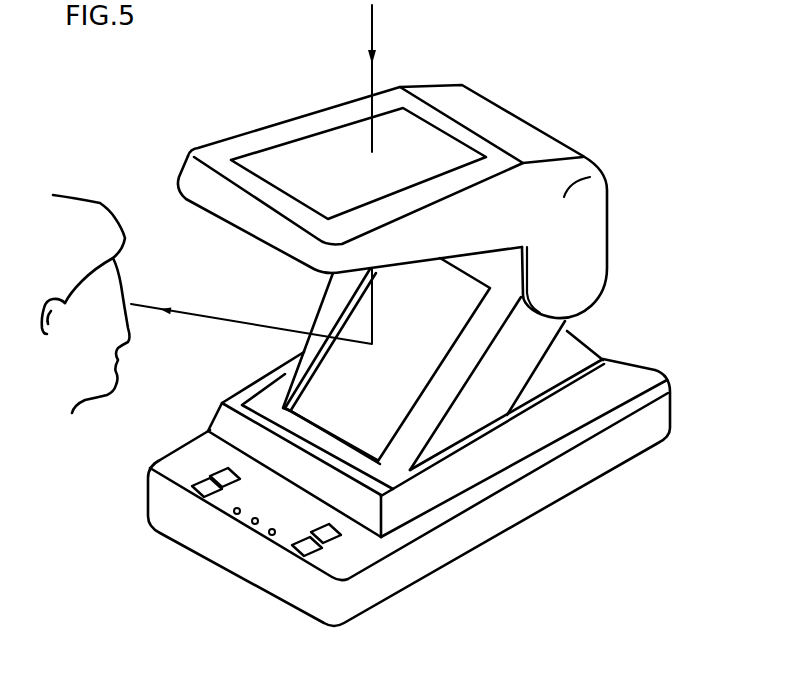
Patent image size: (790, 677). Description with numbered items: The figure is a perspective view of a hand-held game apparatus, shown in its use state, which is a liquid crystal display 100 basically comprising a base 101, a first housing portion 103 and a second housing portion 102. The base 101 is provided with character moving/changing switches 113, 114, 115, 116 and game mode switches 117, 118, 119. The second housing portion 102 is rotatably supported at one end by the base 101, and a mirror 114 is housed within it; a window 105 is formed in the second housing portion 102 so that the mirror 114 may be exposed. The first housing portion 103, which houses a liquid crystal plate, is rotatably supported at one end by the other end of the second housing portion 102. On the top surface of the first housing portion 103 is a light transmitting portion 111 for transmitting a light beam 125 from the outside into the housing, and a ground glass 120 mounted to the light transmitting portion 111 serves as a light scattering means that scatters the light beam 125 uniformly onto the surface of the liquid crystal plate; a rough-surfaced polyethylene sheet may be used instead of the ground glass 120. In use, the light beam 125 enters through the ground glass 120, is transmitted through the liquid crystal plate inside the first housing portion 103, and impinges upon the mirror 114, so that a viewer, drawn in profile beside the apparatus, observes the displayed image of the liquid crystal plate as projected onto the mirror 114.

The liquid crystal display 100 is at (510, 96).
The base 101 is at (560, 492).
The second housing portion 102 is at (540, 337).
The first housing portion 103 is at (600, 202).
The window 105 is at (334, 316).
The light transmitting portion 111 is at (294, 136).
The character moving/changing switch 113 is at (211, 477).
The mirror 114 is at (303, 387).
The character moving/changing switch 115 is at (323, 546).
The character moving/changing switch 116 is at (324, 551).
The game mode switch 117 is at (234, 513).
The game mode switch 118 is at (253, 524).
The game mode switch 119 is at (271, 536).
The ground glass 120 is at (262, 162).
The light beam 125 is at (372, 32).